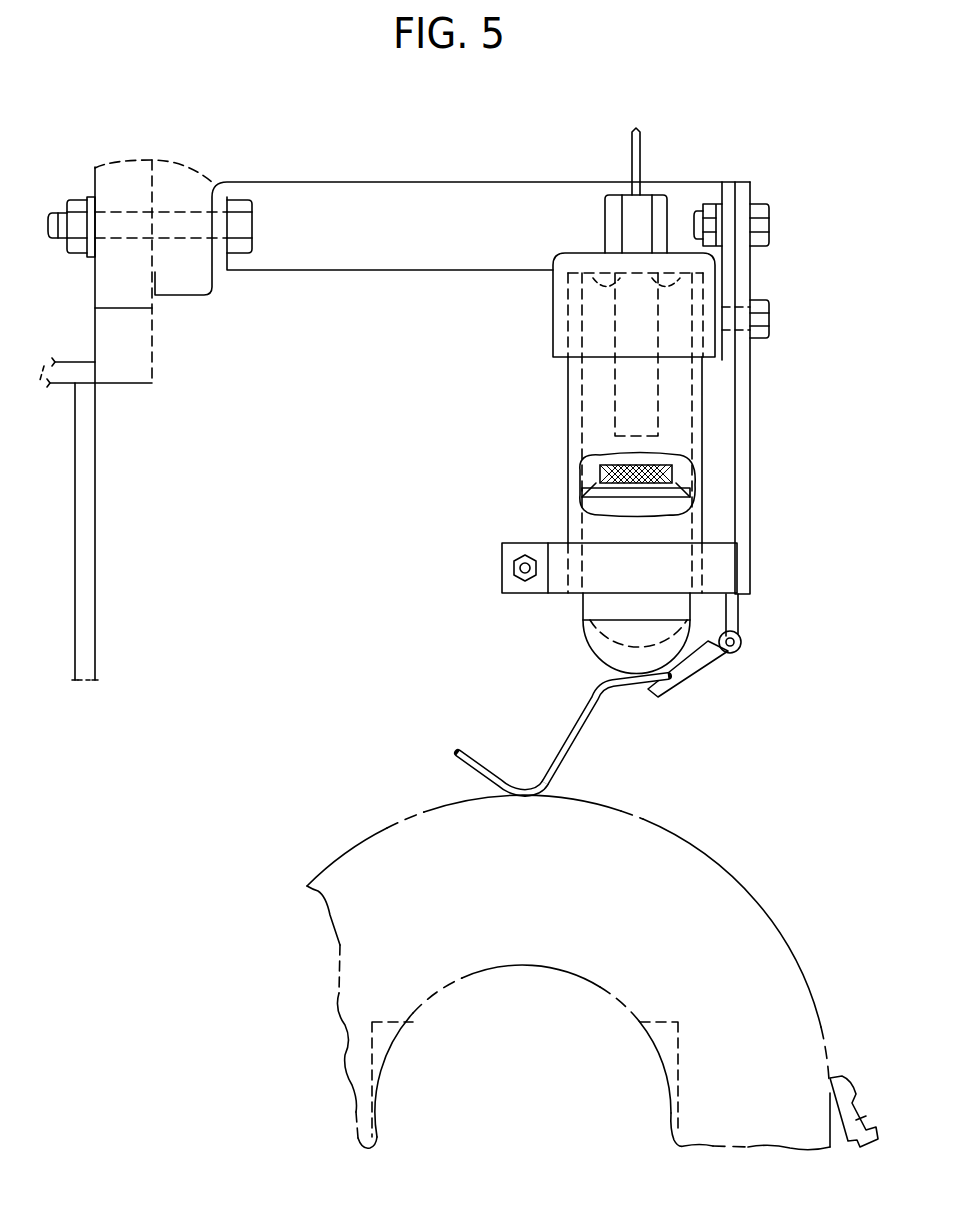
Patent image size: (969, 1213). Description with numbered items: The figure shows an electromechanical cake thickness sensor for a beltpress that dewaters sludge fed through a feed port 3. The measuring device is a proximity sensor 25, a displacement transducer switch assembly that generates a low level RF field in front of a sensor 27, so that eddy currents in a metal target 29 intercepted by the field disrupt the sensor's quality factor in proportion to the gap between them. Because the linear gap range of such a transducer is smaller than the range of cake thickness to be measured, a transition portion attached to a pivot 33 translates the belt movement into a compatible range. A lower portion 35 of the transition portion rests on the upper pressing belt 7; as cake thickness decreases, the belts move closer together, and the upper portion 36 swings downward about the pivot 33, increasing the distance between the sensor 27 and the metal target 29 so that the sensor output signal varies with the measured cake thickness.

The feed port 3 is at (525, 690).
The pressing belt 7 is at (660, 822).
The proximity sensor 25 is at (720, 450).
The sensor 27 is at (632, 436).
The metal target 29 is at (600, 470).
The pivot 33 is at (741, 646).
The lower portion 35 is at (505, 793).
The upper portion 36 is at (610, 700).